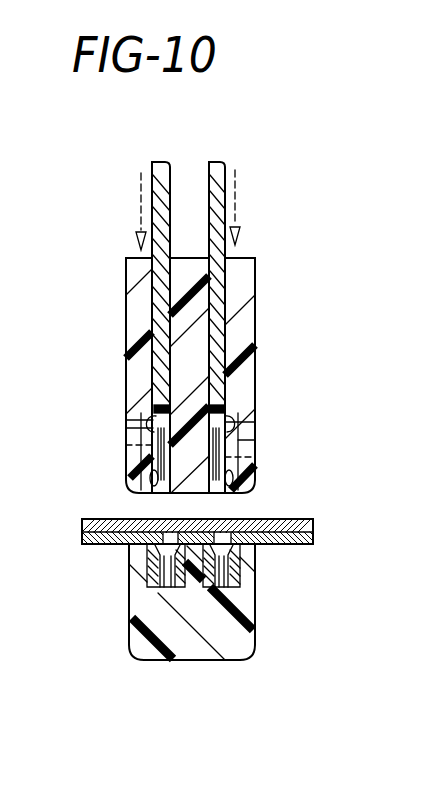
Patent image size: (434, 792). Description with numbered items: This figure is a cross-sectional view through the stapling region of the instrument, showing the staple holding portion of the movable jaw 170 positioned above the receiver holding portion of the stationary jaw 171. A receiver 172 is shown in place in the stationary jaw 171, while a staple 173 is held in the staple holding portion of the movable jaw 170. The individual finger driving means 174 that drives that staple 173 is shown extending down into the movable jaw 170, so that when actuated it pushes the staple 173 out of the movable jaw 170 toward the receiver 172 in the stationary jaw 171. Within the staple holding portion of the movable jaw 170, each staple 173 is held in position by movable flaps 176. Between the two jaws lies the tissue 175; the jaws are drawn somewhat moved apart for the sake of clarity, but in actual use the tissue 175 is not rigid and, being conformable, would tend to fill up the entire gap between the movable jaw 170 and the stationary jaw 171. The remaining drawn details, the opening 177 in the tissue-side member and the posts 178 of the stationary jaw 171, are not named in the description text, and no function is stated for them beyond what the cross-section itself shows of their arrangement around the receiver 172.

The movable jaw 170 is at (248, 305).
The stationary jaw 171 is at (256, 621).
The receiver 172 is at (147, 572).
The staple 173 is at (132, 455).
The finger driving means 174 is at (152, 298).
The tissue 175 is at (244, 518).
The movable flaps 176 is at (138, 420).
The board hole 177 is at (167, 537).
The receptacle post 178 is at (148, 572).